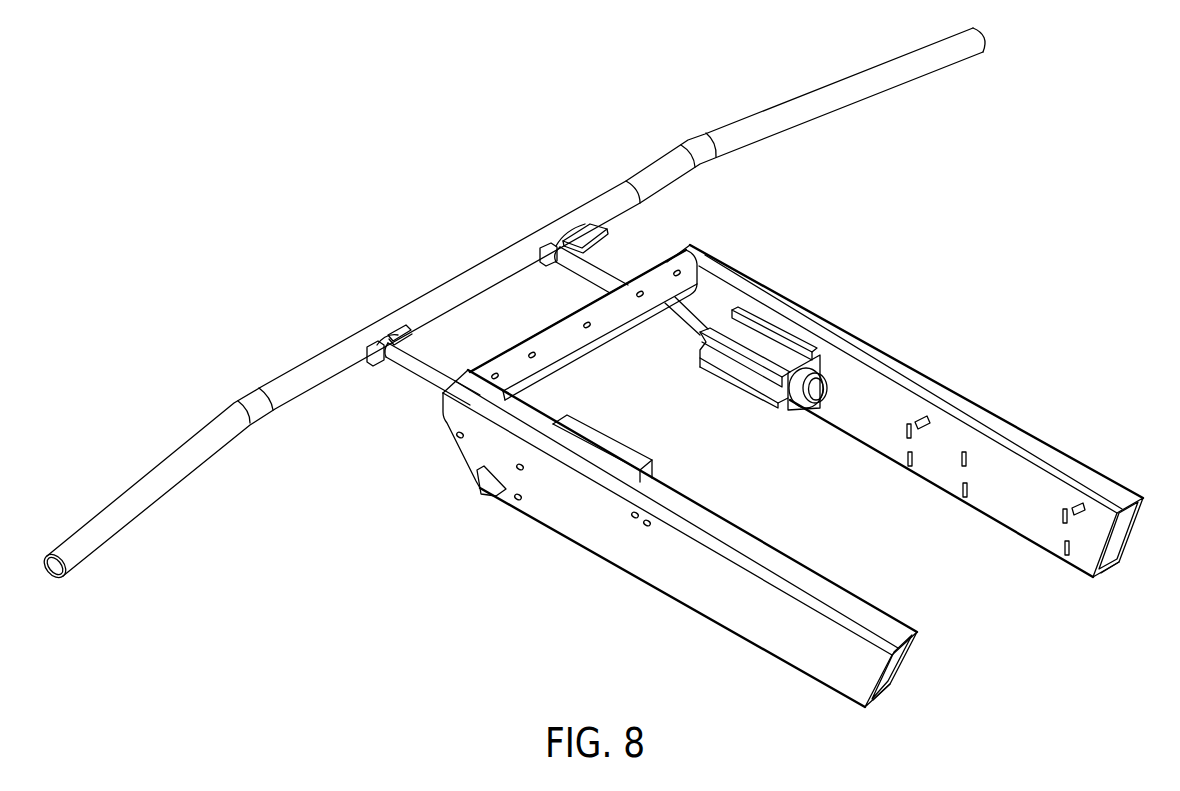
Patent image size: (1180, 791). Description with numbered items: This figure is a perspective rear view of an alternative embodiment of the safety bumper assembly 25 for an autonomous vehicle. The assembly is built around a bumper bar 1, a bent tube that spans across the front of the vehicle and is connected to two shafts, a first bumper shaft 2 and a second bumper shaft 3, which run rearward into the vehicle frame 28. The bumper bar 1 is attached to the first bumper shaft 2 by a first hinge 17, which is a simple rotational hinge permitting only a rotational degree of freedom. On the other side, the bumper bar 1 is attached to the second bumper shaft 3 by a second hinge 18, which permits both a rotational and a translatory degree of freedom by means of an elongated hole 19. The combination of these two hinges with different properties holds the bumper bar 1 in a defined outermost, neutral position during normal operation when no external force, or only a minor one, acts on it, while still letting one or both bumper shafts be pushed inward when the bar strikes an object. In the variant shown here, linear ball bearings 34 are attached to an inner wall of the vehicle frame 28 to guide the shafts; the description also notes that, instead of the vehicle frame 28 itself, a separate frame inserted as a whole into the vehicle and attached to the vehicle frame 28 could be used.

The bumper bar 1 is at (835, 88).
The first bumper shaft 2 is at (443, 378).
The second bumper shaft 3 is at (605, 276).
The first hinge 17 is at (376, 338).
The second hinge 18 is at (544, 247).
The elongated hole 19 is at (580, 208).
The safety bumper assembly 25 is at (563, 625).
The vehicle frame 28 is at (977, 413).
The linear ball bearings 34 is at (763, 349).